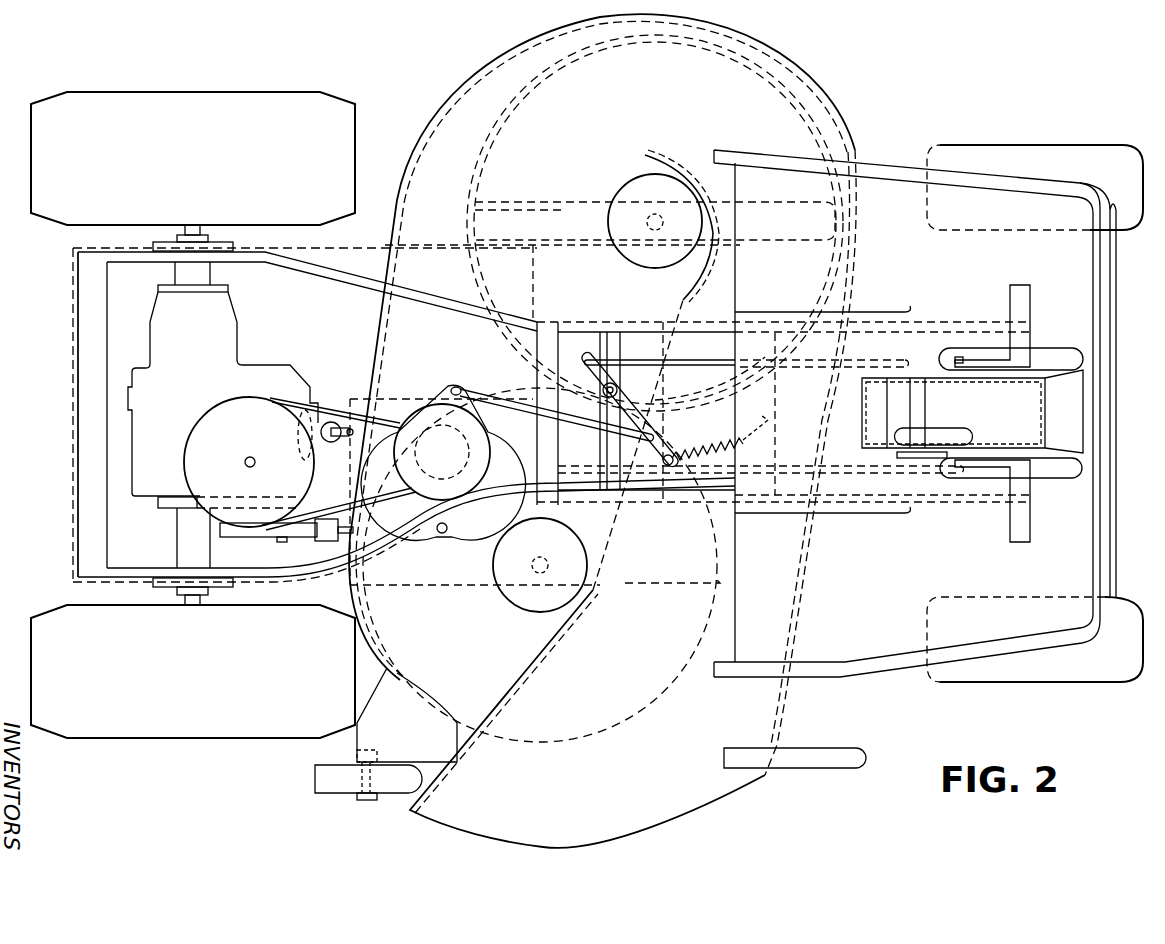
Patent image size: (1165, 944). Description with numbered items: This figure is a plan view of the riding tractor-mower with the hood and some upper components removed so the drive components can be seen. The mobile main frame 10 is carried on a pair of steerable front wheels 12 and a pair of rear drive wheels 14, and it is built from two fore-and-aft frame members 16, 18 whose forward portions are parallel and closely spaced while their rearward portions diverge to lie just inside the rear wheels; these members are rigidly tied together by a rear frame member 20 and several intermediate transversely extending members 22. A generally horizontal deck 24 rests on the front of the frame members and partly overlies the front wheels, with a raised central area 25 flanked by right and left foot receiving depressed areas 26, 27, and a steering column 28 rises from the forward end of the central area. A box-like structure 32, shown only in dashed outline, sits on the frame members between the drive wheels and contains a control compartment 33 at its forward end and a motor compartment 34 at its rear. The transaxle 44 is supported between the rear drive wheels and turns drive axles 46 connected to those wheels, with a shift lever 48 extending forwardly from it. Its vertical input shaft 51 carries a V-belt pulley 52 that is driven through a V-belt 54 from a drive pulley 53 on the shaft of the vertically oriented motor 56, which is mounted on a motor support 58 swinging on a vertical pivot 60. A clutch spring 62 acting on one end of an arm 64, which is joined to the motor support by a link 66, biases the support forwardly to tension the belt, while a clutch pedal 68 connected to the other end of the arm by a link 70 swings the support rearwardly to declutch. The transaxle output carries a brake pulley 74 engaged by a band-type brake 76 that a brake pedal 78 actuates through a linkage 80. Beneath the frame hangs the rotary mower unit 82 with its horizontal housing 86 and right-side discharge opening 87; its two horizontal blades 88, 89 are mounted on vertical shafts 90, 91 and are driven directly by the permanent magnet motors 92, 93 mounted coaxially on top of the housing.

The main frame 10 is at (63, 275).
The steerable front wheels 12 is at (1001, 148).
The rear drive wheels 14 is at (222, 92).
The frame member 16 is at (128, 568).
The frame member 18 is at (315, 271).
The rear frame member 20 is at (80, 510).
The intermediate transversely extending members 22 is at (604, 345).
The deck 24 is at (895, 681).
The raised central area 25 is at (862, 340).
The right foot receiving depressed area 26 is at (863, 583).
The left foot receiving depressed area 27 is at (790, 282).
The steering column 28 is at (1075, 432).
The box-like structure 32 is at (62, 390).
The control compartment 33 is at (590, 322).
The motor compartment 34 is at (386, 398).
The transaxle 44 is at (155, 332).
The drive axles 46 is at (192, 228).
The shift lever 48 is at (338, 444).
The vertical input shaft 51 is at (245, 462).
The V-belt pulley 52 is at (192, 443).
The drive pulley 53 is at (470, 463).
The V-belt 54 is at (330, 418).
The motor 56 is at (490, 446).
The motor support 58 is at (452, 392).
The vertical pivot 60 is at (442, 534).
The clutch spring 62 is at (701, 442).
The arm 64 is at (607, 405).
The link 66 is at (592, 420).
The clutch pedal 68 is at (1030, 311).
The link 70 is at (694, 361).
The brake pulley 74 is at (236, 537).
The band-type brake 76 is at (283, 537).
The brake pedal 78 is at (1030, 522).
The linkage 80 is at (680, 491).
The rotary mower unit 82 is at (438, 80).
The housing 86 is at (694, 733).
The discharge opening 87 is at (626, 834).
The blade 88 is at (655, 586).
The blade 89 is at (522, 200).
The vertical shaft 90 is at (548, 565).
The vertical shaft 91 is at (660, 214).
The motor 92 is at (516, 600).
The motor 93 is at (626, 196).